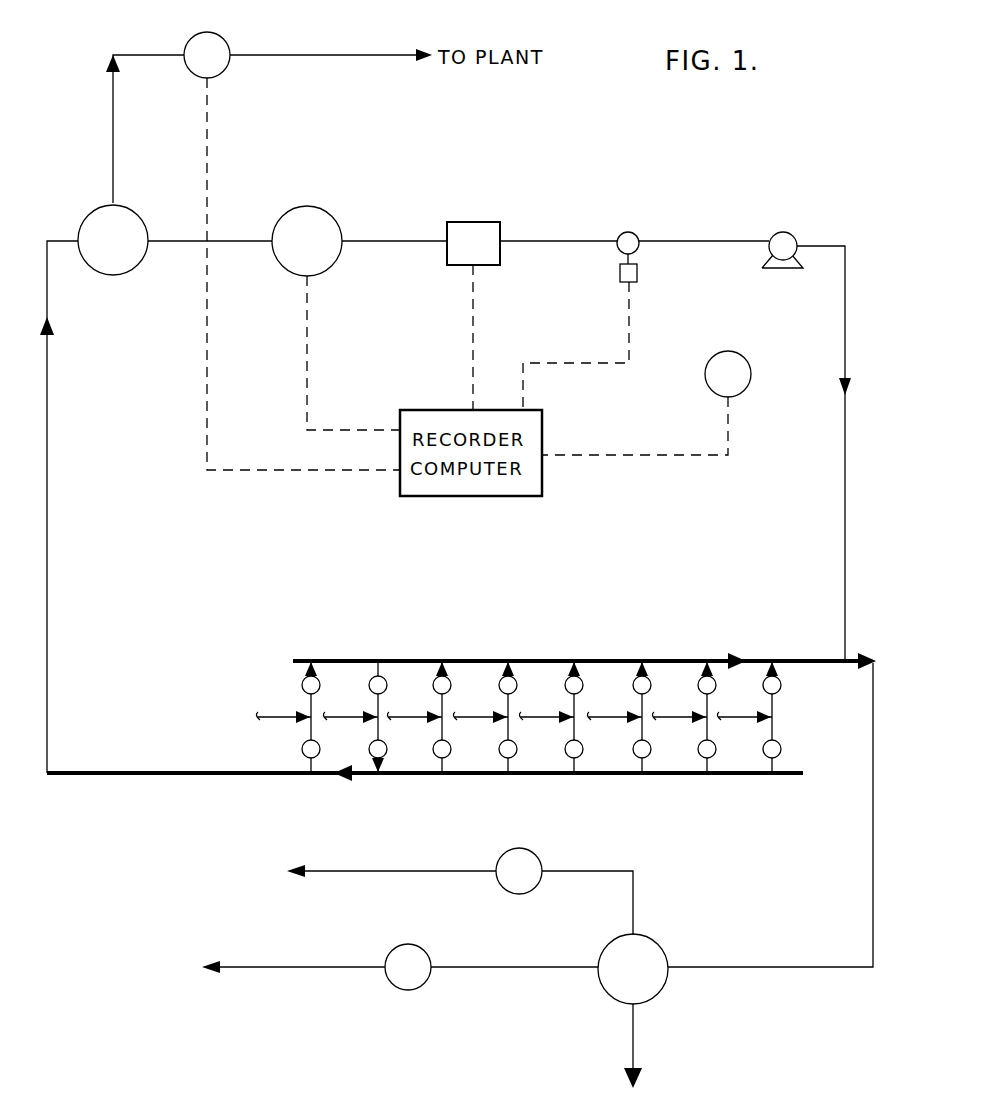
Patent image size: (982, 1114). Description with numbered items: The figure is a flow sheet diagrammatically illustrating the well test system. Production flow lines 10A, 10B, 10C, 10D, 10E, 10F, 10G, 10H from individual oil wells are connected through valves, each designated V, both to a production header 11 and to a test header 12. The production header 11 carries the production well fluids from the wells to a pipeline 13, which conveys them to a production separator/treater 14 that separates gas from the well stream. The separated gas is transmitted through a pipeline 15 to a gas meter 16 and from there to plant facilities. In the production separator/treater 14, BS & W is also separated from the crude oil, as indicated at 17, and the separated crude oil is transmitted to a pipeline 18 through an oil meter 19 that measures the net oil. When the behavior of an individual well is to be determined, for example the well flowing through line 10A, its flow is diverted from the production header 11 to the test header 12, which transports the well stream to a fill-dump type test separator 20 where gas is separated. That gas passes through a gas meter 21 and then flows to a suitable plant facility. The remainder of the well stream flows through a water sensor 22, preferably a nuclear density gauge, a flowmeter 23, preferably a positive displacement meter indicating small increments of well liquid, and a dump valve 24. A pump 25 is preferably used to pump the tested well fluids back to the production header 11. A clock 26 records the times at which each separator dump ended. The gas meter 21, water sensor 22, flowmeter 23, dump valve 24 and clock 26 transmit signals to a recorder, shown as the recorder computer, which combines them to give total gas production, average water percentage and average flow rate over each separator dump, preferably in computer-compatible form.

The production flow line 10A is at (278, 717).
The production flow line 10B is at (345, 717).
The production flow line 10C is at (410, 717).
The production flow line 10D is at (476, 717).
The production flow line 10E is at (541, 717).
The production flow line 10F is at (609, 717).
The production flow line 10G is at (675, 717).
The production flow line 10H is at (740, 717).
The production header 11 is at (613, 660).
The test header 12 is at (318, 776).
The pipeline 13 is at (873, 871).
The production separator/treater 14 is at (670, 998).
The pipeline 15 is at (633, 888).
The gas meter 16 is at (529, 884).
The BS & W outlet 17 is at (633, 1040).
The pipeline 18 is at (299, 966).
The oil meter 19 is at (410, 1002).
The test separator 20 is at (115, 289).
The gas meter 21 is at (205, 18).
The water sensor 22 is at (305, 193).
The flowmeter 23 is at (471, 209).
The dump valve 24 is at (618, 262).
The pump 25 is at (780, 243).
The clock 26 is at (726, 338).